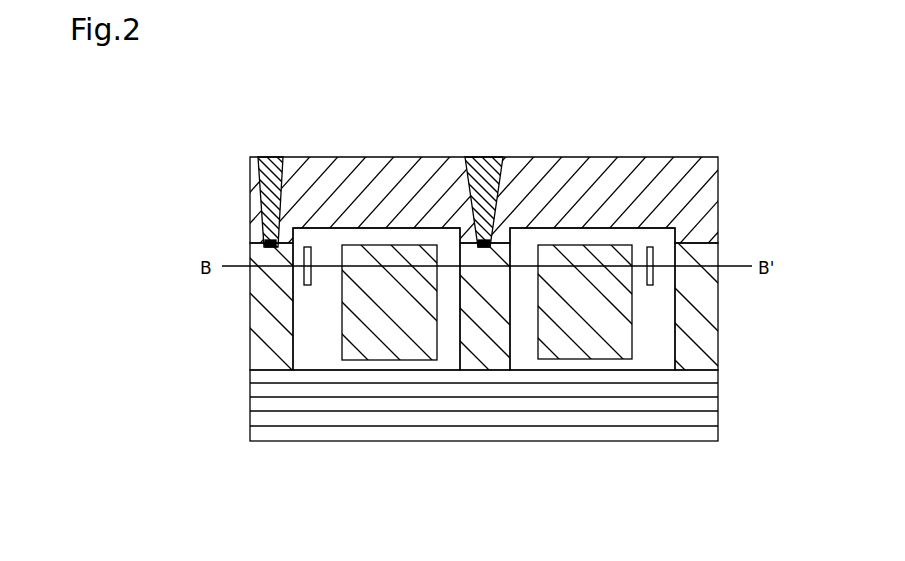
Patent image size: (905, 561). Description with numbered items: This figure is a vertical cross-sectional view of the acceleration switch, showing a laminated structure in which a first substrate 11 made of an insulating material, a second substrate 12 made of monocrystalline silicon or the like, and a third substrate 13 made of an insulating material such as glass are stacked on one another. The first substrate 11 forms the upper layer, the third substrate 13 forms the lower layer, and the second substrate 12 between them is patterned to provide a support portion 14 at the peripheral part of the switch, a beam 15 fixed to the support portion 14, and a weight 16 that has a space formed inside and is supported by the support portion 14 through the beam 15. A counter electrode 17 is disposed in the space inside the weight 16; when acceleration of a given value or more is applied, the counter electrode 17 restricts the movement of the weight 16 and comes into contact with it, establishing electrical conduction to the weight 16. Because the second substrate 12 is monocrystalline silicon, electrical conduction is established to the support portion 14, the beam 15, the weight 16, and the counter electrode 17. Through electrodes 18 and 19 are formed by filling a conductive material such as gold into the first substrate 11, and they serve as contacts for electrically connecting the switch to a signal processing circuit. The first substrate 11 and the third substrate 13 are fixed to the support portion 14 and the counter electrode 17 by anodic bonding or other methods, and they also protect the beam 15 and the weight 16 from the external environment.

The first substrate 11 is at (660, 162).
The second substrate 12 is at (453, 275).
The third substrate 13 is at (665, 415).
The support portion 14 is at (705, 299).
The beam 15 is at (652, 250).
The weight 16 is at (368, 347).
The counter electrode 17 is at (492, 356).
The through electrode 18 is at (289, 159).
The through electrode 19 is at (503, 158).